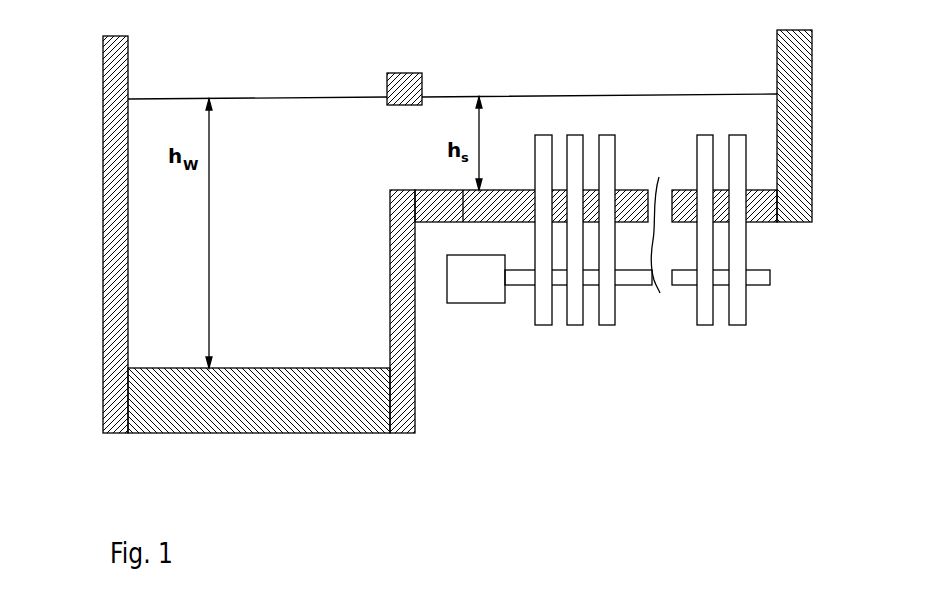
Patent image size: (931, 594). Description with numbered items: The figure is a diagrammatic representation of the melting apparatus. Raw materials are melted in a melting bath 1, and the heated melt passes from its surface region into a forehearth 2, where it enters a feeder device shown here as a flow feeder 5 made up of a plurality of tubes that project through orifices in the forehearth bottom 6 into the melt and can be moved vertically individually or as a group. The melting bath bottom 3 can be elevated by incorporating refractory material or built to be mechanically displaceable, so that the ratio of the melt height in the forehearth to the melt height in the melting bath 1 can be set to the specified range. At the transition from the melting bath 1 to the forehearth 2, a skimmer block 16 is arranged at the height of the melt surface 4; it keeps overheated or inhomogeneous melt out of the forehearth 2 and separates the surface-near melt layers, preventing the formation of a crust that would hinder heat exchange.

The melting bath 1 is at (168, 227).
The forehearth 2 is at (770, 159).
The melting bath bottom 3 is at (353, 397).
The melt surface 4 is at (267, 99).
The flow feeder 5 is at (608, 278).
The forehearth bottom 6 is at (778, 220).
The skimmer block 16 is at (403, 82).